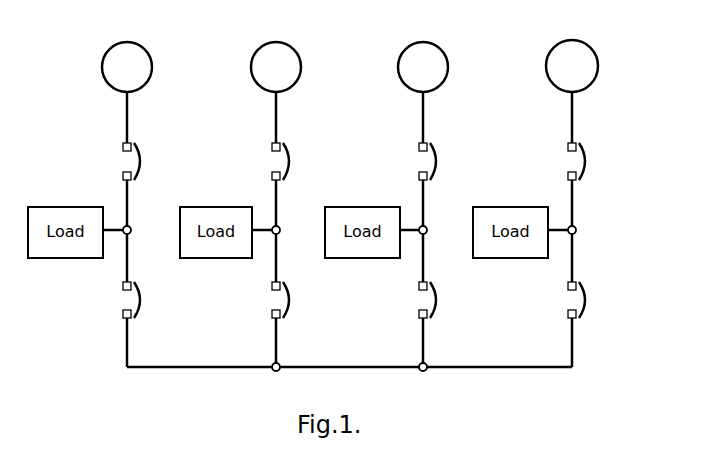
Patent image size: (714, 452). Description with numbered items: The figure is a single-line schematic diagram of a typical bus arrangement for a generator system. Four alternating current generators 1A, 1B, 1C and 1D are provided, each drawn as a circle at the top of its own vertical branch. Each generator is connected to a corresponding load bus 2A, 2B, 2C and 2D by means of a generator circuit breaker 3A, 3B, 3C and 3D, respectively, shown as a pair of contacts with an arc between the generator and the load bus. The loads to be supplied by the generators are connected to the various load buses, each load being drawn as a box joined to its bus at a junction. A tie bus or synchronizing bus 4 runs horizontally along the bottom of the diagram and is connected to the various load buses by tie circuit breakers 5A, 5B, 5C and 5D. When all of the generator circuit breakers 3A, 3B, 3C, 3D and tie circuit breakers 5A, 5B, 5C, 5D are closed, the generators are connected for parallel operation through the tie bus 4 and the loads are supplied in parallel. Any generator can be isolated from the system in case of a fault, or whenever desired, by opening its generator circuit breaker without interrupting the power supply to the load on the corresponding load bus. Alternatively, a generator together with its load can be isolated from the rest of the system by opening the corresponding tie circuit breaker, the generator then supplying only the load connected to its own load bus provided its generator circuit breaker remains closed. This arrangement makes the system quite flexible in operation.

The alternating current generator 1A is at (145, 49).
The alternating current generator 1B is at (294, 49).
The alternating current generator 1C is at (441, 49).
The alternating current generator 1D is at (590, 48).
The load bus 2A is at (128, 206).
The load bus 2B is at (277, 206).
The load bus 2C is at (424, 206).
The load bus 2D is at (573, 206).
The generator circuit breaker 3A is at (142, 158).
The generator circuit breaker 3B is at (291, 158).
The generator circuit breaker 3C is at (438, 158).
The generator circuit breaker 3D is at (587, 158).
The tie bus 4 is at (350, 369).
The tie circuit breaker 5A is at (142, 297).
The tie circuit breaker 5B is at (291, 297).
The tie circuit breaker 5C is at (438, 297).
The tie circuit breaker 5D is at (587, 297).